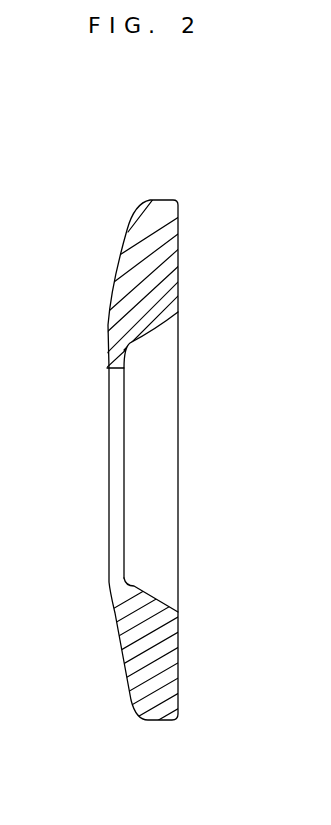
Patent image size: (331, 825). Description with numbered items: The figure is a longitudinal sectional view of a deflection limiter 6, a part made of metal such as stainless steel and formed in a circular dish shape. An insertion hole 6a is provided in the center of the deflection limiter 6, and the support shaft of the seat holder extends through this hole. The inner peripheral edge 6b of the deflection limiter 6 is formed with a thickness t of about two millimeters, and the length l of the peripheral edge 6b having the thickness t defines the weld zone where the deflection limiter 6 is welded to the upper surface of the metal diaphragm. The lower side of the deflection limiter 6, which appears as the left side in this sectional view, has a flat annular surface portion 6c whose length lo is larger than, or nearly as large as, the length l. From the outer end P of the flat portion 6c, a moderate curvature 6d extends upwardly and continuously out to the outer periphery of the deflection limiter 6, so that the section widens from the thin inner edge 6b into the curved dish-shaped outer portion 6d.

The deflection limiter 6 is at (183, 262).
The insertion hole 6a is at (117, 447).
The inner peripheral edge 6b is at (115, 358).
The flat annular surface portion 6c is at (108, 580).
The moderate curvature 6d is at (122, 667).
The thickness t is at (158, 404).
The outer end P is at (109, 590).
The length of flat portion lo is at (150, 559).
The length of peripheral edge l is at (148, 581).